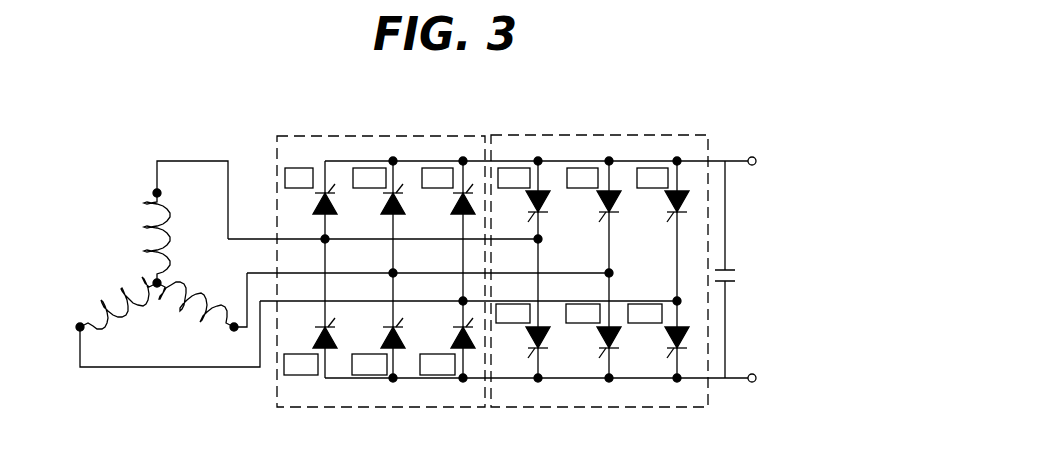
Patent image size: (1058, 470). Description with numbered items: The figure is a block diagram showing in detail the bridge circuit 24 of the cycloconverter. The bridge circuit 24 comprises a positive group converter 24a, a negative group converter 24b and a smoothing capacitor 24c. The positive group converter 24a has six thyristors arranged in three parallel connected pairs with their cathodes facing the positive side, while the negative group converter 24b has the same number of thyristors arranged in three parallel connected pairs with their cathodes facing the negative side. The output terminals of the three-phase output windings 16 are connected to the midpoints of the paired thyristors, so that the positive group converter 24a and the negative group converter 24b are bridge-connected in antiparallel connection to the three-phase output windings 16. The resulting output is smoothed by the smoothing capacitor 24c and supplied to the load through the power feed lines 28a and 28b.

The three-phase output windings 16 is at (108, 262).
The bridge circuit 24 is at (507, 238).
The positive group converter 24a is at (382, 133).
The negative group converter 24b is at (604, 133).
The smoothing capacitor 24c is at (730, 282).
The power feed line 28a is at (716, 160).
The power feed line 28b is at (717, 380).